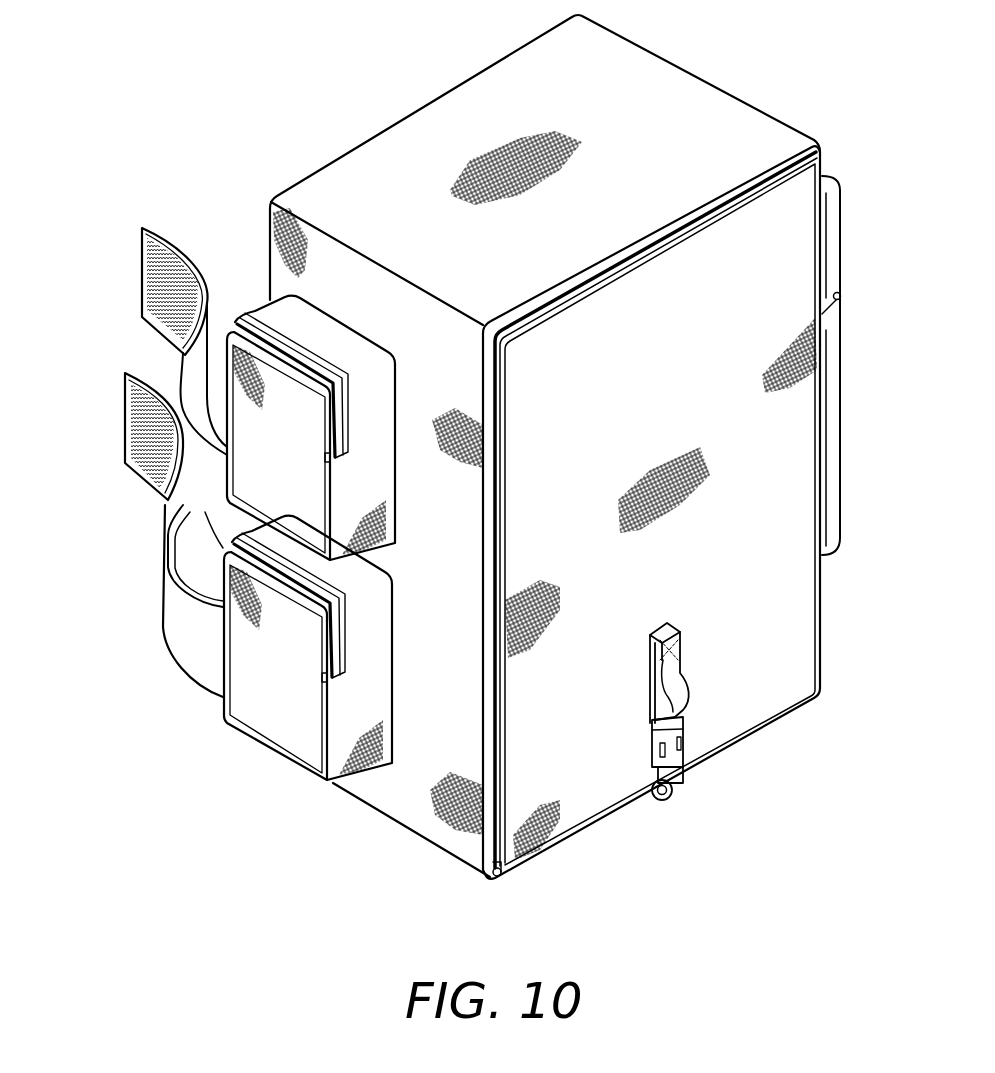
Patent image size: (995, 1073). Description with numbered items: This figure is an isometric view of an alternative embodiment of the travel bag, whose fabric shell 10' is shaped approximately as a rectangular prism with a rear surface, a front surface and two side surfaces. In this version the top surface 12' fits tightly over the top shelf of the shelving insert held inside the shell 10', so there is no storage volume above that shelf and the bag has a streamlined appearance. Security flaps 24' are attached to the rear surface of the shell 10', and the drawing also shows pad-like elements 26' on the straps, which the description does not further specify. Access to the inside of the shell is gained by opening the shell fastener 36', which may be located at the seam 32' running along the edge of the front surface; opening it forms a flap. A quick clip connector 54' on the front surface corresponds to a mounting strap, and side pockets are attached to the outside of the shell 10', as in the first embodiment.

The fabric shell 10' is at (585, 478).
The top surface 12' is at (545, 446).
The security flaps 24' is at (178, 511).
The strap fastening pads 26' is at (124, 375).
The seam 32' is at (585, 529).
The shell fastener 36' is at (474, 902).
The quick clip connector 54' is at (703, 735).